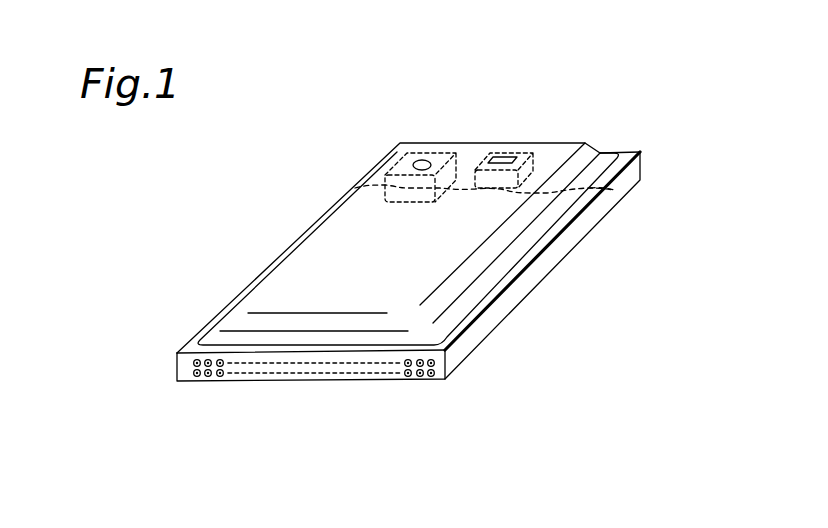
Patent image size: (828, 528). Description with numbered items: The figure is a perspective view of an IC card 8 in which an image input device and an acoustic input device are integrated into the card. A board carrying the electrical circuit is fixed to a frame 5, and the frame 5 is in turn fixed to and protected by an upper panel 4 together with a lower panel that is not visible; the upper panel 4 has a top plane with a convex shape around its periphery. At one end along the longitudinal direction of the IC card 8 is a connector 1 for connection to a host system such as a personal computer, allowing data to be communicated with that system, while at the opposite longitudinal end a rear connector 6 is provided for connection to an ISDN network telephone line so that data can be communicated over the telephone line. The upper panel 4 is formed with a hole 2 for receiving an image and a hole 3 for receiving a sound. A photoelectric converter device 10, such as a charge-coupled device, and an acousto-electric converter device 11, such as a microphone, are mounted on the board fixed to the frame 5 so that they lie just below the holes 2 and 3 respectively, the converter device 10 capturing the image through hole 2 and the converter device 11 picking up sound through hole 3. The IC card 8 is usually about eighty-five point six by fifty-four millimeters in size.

The connector 1 is at (409, 376).
The hole for receiving an image 2 is at (421, 160).
The hole for receiving a sound 3 is at (504, 157).
The upper panel 4 is at (558, 160).
The frame 5 is at (536, 283).
The rear connector 6 is at (375, 153).
The IC card 8 is at (236, 227).
The photoelectric converter device 10 is at (355, 188).
The acousto-electric converter device 11 is at (614, 190).